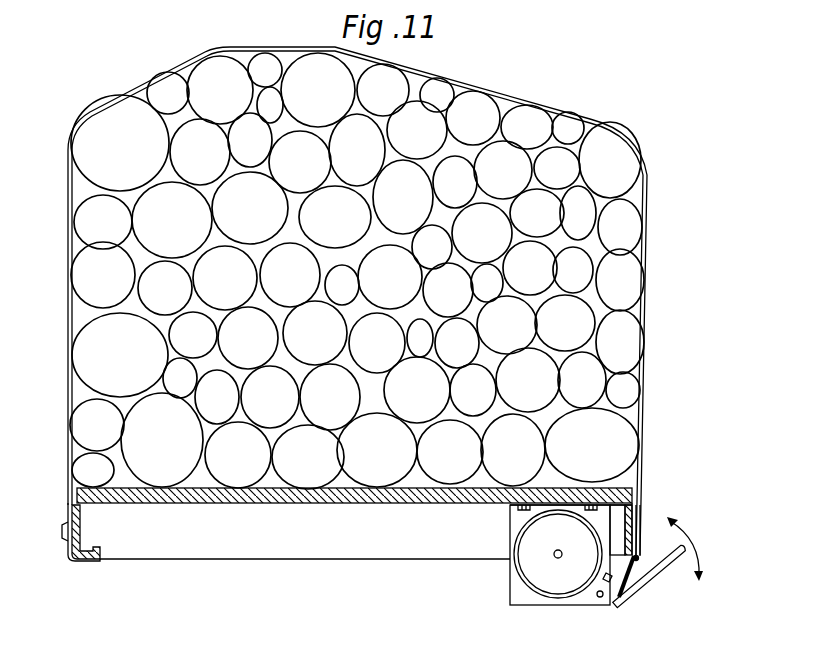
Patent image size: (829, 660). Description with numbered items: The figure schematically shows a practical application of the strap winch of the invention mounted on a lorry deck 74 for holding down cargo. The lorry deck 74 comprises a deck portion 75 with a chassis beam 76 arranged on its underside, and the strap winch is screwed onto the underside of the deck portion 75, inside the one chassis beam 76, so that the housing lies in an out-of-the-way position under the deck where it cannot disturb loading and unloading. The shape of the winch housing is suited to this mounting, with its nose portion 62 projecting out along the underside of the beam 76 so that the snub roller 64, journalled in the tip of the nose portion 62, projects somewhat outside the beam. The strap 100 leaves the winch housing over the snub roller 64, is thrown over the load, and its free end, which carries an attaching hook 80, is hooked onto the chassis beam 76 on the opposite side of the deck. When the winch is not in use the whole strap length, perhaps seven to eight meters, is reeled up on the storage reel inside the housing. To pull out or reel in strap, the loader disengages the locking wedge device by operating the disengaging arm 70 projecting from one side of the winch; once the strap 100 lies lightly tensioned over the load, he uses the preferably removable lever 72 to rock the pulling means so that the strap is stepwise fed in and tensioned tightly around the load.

The strap 100 is at (503, 95).
The lorry deck 74 is at (211, 469).
The deck portion 75 is at (246, 496).
The attaching hook 80 is at (107, 551).
The chassis beam 76 is at (637, 506).
The snub roller 64 is at (637, 557).
The lever 72 is at (660, 558).
The nose portion 62 is at (622, 606).
The disengaging arm 70 is at (612, 582).